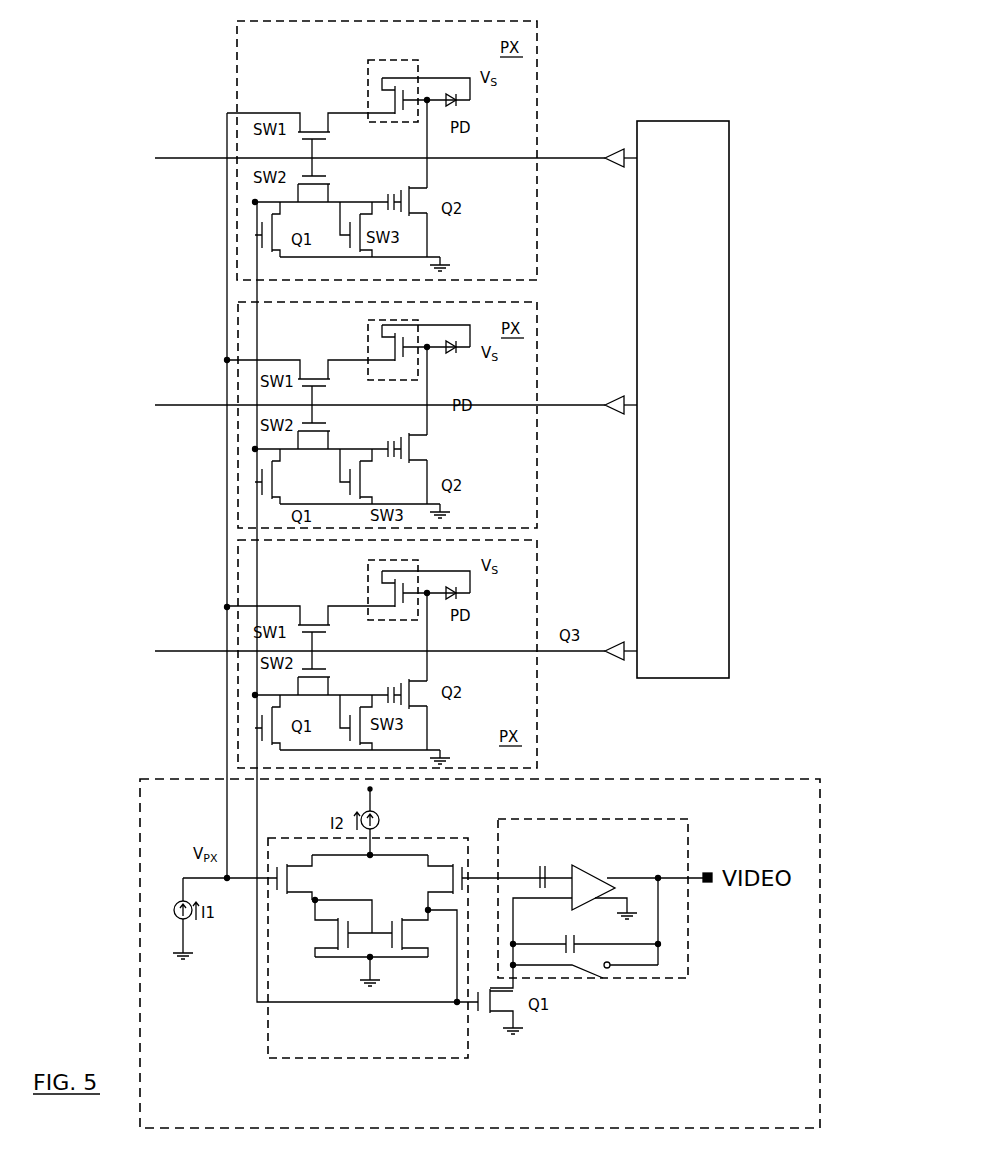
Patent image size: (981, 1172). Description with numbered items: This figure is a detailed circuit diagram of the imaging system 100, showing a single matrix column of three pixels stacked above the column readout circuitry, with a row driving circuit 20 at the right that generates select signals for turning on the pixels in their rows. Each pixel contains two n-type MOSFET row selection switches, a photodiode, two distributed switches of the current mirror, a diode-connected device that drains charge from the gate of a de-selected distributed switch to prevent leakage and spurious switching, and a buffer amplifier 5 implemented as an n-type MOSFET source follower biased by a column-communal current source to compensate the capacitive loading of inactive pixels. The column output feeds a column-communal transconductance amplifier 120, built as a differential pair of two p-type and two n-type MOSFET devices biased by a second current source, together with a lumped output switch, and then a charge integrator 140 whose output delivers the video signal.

The buffer amplifier 5 is at (365, 65).
The row driving circuit 20 is at (683, 399).
The imaging system 100 is at (806, 84).
The transconductance amplifier 120 is at (438, 1037).
The charge integrator 140 is at (650, 856).